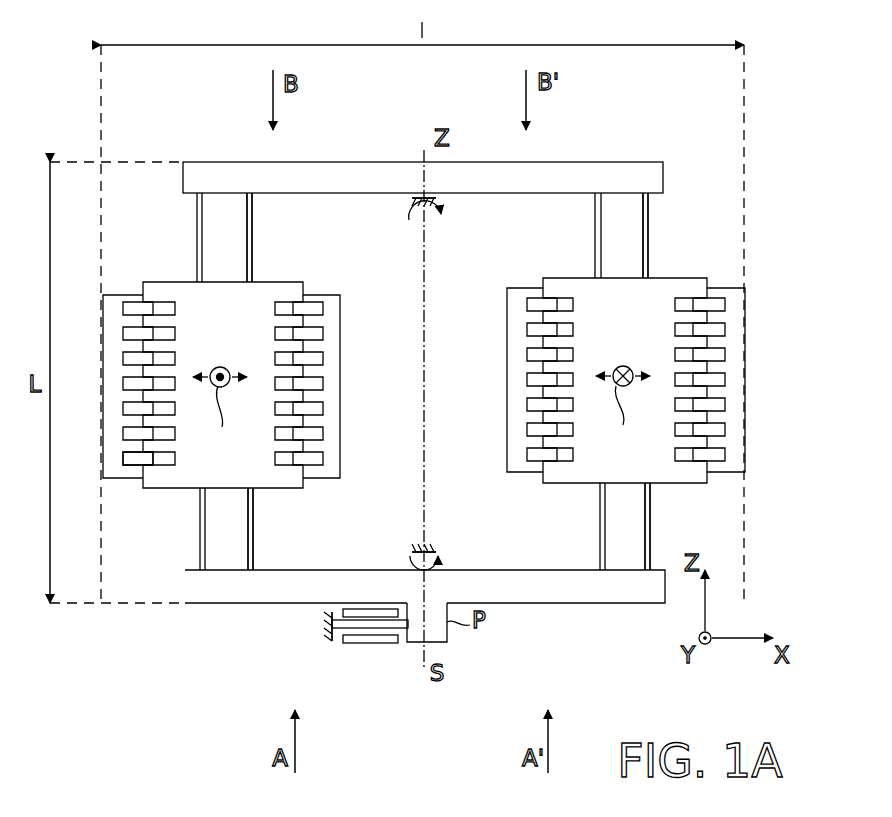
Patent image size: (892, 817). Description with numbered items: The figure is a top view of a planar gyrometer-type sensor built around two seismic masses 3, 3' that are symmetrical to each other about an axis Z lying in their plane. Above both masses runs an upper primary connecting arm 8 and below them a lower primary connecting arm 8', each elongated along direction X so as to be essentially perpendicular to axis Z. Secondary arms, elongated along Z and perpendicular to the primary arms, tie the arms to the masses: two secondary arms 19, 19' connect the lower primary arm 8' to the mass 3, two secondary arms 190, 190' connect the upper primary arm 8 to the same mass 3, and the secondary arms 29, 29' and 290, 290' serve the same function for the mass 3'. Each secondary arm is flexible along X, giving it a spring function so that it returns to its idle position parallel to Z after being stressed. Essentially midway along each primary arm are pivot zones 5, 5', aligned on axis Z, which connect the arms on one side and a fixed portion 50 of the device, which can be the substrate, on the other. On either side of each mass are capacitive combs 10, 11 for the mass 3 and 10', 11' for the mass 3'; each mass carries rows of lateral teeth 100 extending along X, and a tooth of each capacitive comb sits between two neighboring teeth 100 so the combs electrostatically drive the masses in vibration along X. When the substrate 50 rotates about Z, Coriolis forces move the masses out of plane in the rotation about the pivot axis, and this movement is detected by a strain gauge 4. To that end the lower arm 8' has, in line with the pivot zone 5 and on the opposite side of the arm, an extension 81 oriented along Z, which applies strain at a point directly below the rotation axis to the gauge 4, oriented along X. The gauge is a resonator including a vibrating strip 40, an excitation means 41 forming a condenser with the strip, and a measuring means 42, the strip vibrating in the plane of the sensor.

The seismic mass 3 is at (223, 362).
The seismic mass 3' is at (625, 356).
The strain gauge 4 is at (392, 652).
The pivot zone 5 is at (442, 538).
The pivot zone 5' is at (460, 224).
The primary connecting arm 8 is at (423, 138).
The primary connecting arm 8' is at (425, 625).
The extension 81 is at (430, 642).
The capacitive comb 10 is at (104, 386).
The capacitive comb 11 is at (343, 384).
The capacitive comb 10' is at (498, 380).
The capacitive comb 11' is at (747, 380).
The lateral tooth 100 is at (145, 463).
The secondary arm 19 is at (179, 529).
The secondary arm 19' is at (286, 529).
The secondary arm 29 is at (583, 526).
The secondary arm 29' is at (685, 526).
The secondary arm 190 is at (187, 237).
The secondary arm 190' is at (299, 237).
The secondary arm 290 is at (584, 235).
The secondary arm 290' is at (690, 235).
The vibrating strip 40 is at (328, 642).
The excitation means 41 is at (375, 617).
The measuring means 42 is at (350, 645).
The fixed portion 50 is at (418, 205).